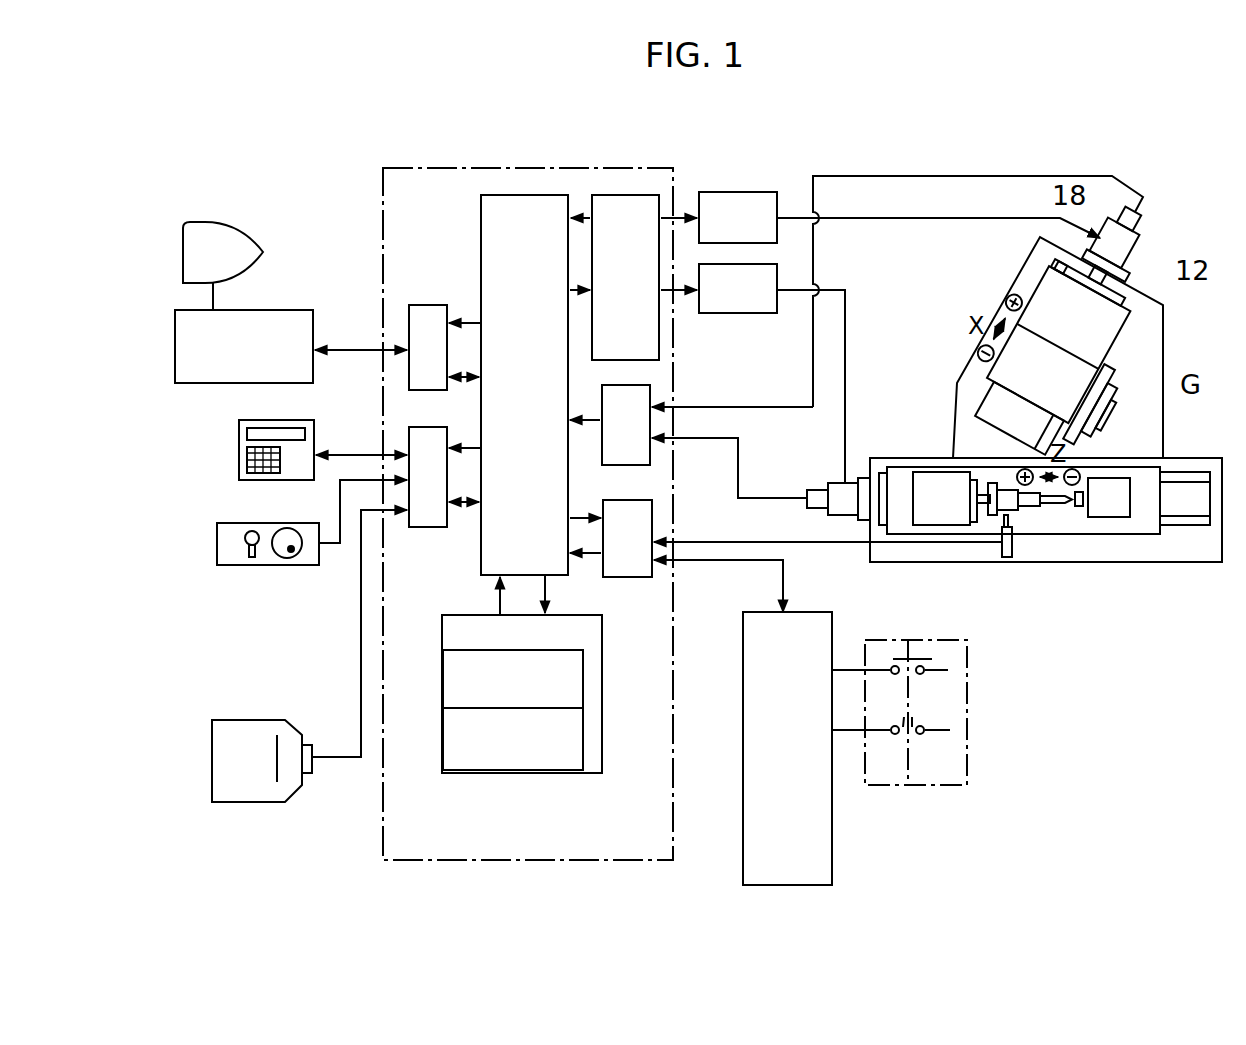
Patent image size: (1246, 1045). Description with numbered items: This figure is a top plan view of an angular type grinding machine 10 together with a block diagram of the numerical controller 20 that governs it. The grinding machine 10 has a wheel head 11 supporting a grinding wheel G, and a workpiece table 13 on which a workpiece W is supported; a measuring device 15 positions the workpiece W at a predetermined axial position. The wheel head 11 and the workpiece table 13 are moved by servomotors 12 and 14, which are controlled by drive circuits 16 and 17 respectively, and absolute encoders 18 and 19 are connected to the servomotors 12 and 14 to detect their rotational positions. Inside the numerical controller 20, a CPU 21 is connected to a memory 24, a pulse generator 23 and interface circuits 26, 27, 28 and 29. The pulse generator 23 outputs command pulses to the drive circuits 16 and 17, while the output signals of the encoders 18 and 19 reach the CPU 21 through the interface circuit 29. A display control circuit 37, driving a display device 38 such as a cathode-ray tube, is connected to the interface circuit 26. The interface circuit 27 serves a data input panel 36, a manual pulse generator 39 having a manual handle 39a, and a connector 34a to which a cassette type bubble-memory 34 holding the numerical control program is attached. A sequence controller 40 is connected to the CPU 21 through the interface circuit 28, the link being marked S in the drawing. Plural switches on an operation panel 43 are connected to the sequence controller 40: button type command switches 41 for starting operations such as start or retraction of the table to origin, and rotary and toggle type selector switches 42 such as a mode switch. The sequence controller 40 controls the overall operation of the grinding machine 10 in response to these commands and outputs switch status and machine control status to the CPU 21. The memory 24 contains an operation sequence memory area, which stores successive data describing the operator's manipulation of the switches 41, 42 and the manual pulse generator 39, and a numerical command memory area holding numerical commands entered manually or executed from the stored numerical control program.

The angular type grinding machine 10 is at (1140, 238).
The wheel head 11 is at (1170, 330).
The servomotor 12 is at (1128, 262).
The workpiece table 13 is at (1153, 458).
The servomotor 14 is at (833, 483).
The measuring device 15 is at (1003, 548).
The drive circuit 16 is at (700, 194).
The drive circuit 17 is at (704, 313).
The absolute encoder 18 is at (1115, 224).
The absolute encoder 19 is at (807, 492).
The numerical controller 20 is at (673, 168).
The CPU 21 is at (481, 196).
The pulse generator 23 is at (606, 196).
The memory 24 is at (604, 620).
The interface circuit 26 is at (412, 304).
The interface circuit 27 is at (411, 432).
The interface circuit 28 is at (654, 504).
The interface circuit 29 is at (652, 388).
The cassette type bubble-memory 34 is at (225, 720).
The connector 34a is at (306, 746).
The data input panel 36 is at (239, 437).
The display control circuit 37 is at (312, 310).
The display device 38 is at (244, 234).
The manual pulse generator 39 is at (217, 553).
The manual handle 39a is at (283, 560).
The sequence controller 40 is at (832, 625).
The command switches 41 is at (935, 661).
The selector switches 42 is at (927, 724).
The operation panel 43 is at (968, 768).
The grinding wheel G is at (1122, 379).
The workpiece W is at (1036, 518).
The signal S is at (725, 562).